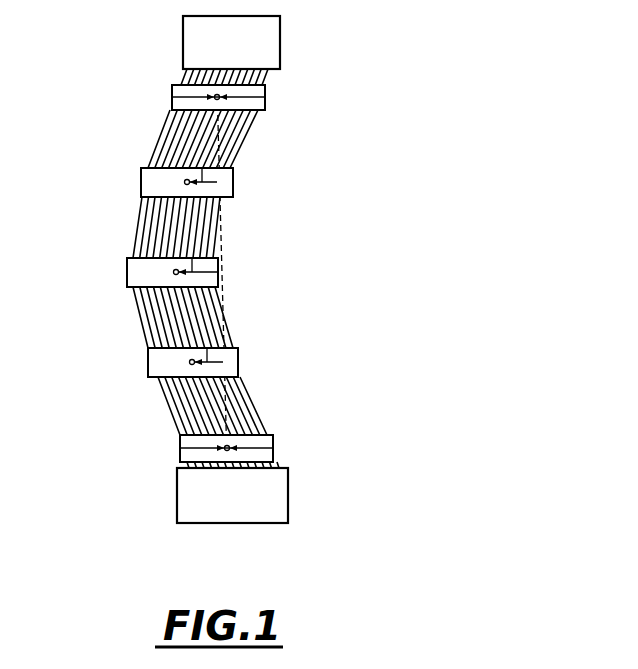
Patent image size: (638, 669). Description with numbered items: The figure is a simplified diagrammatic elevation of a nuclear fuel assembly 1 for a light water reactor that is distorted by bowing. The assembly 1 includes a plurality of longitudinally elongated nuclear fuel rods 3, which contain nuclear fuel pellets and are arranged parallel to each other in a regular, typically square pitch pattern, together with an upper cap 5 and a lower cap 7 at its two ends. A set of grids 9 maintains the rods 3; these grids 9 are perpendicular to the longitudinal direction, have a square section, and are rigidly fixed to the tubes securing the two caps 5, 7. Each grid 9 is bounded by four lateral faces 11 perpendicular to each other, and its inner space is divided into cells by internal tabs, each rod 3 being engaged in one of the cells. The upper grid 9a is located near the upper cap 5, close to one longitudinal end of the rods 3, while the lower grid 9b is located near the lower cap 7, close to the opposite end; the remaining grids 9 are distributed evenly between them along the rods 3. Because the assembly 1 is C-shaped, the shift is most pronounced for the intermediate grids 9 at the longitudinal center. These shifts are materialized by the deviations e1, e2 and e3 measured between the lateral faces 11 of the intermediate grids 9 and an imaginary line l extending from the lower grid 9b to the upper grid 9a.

The nuclear fuel assembly 1 is at (370, 88).
The nuclear fuel rods 3 is at (233, 131).
The upper cap 5 is at (268, 36).
The lower cap 7 is at (275, 500).
The grids 9 is at (187, 282).
The upper grid 9a is at (175, 93).
The lower grid 9b is at (181, 442).
The lateral faces 11 is at (235, 187).
The imaginary line l is at (220, 255).
The deviation e1 is at (202, 168).
The deviation e2 is at (192, 258).
The deviation e3 is at (207, 348).